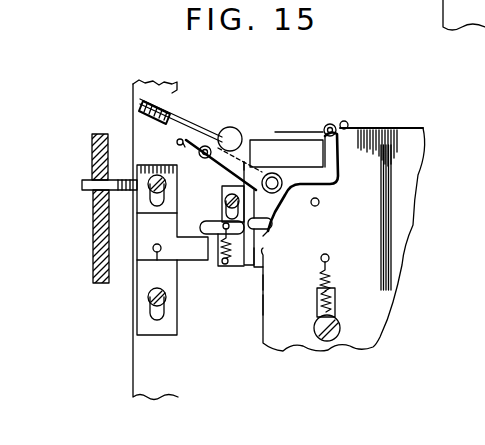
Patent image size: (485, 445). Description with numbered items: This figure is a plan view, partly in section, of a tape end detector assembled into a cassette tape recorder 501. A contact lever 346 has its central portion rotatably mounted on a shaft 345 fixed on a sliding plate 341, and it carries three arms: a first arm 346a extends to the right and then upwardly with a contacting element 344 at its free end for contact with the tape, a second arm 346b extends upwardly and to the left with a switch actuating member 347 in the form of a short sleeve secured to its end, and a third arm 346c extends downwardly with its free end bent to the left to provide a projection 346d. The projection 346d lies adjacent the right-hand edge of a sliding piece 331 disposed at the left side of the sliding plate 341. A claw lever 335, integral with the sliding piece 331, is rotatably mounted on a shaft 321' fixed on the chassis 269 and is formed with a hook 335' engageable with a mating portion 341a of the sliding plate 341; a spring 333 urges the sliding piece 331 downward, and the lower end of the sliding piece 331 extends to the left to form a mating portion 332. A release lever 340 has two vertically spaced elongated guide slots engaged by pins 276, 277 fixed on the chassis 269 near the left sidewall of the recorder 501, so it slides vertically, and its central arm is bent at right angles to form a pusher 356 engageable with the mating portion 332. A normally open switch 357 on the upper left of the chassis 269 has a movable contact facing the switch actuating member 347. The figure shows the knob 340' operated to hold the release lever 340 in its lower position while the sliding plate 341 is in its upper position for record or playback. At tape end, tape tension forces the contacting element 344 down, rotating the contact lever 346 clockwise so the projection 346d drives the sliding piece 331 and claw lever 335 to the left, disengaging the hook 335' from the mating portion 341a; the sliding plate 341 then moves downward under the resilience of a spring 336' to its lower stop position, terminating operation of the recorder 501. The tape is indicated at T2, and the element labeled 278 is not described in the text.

The tape recorder 501 is at (102, 94).
The chassis 269 is at (133, 380).
The knob 340' is at (68, 208).
The release lever 340 is at (109, 248).
The pin 276 is at (152, 168).
The pin 277 is at (147, 311).
The pivot pin 278 is at (154, 263).
The shaft 321' is at (201, 131).
The normally open switch 357 is at (158, 113).
The switch actuating member 347 is at (207, 146).
The sliding piece 331 is at (218, 190).
The mating portion 332 is at (218, 222).
The pusher 356 is at (220, 262).
The spring 333 is at (232, 268).
The second arm 346b is at (244, 165).
The shaft 345 is at (276, 173).
The contacting element 344 is at (327, 123).
The contact lever 346 is at (320, 203).
The first arm 346a is at (334, 152).
The third arm 346c is at (268, 204).
The projection 346d is at (263, 232).
The sliding plate 341 is at (425, 158).
The mating portion 341a is at (263, 268).
The hook 335' is at (282, 286).
The claw lever 335 is at (280, 308).
The spring 336' is at (342, 297).
The tooth T2 is at (379, 132).